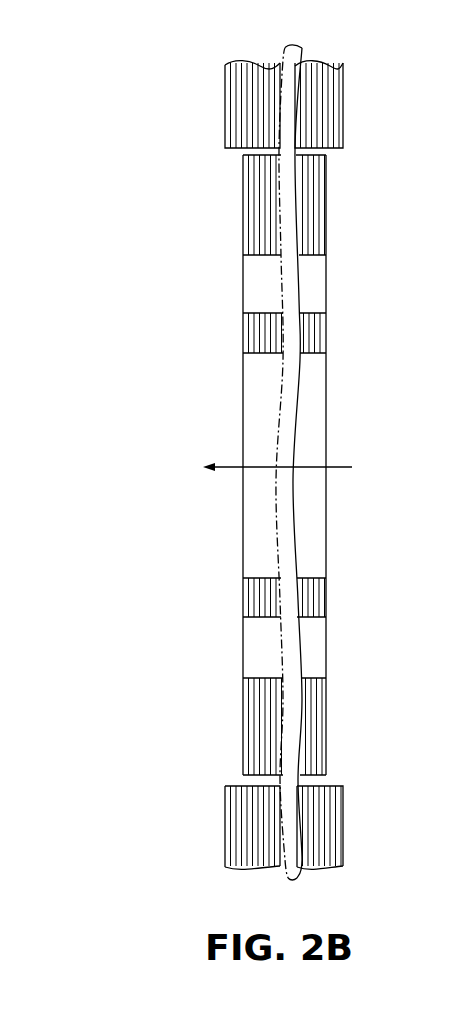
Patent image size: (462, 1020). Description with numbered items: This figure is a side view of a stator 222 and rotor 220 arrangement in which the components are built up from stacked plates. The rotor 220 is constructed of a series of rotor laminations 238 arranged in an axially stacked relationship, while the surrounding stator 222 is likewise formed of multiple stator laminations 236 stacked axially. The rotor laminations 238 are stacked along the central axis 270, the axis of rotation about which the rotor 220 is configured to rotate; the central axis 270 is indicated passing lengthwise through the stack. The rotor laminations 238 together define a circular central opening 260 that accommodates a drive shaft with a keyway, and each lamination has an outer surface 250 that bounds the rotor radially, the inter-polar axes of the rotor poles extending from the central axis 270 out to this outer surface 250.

The rotor 220 is at (289, 460).
The stator 222 is at (278, 476).
The stator laminations 236 is at (232, 866).
The rotor laminations 238 is at (257, 172).
The outer surface 250 is at (318, 788).
The circular central opening 260 is at (270, 355).
The central axis 270 is at (340, 467).